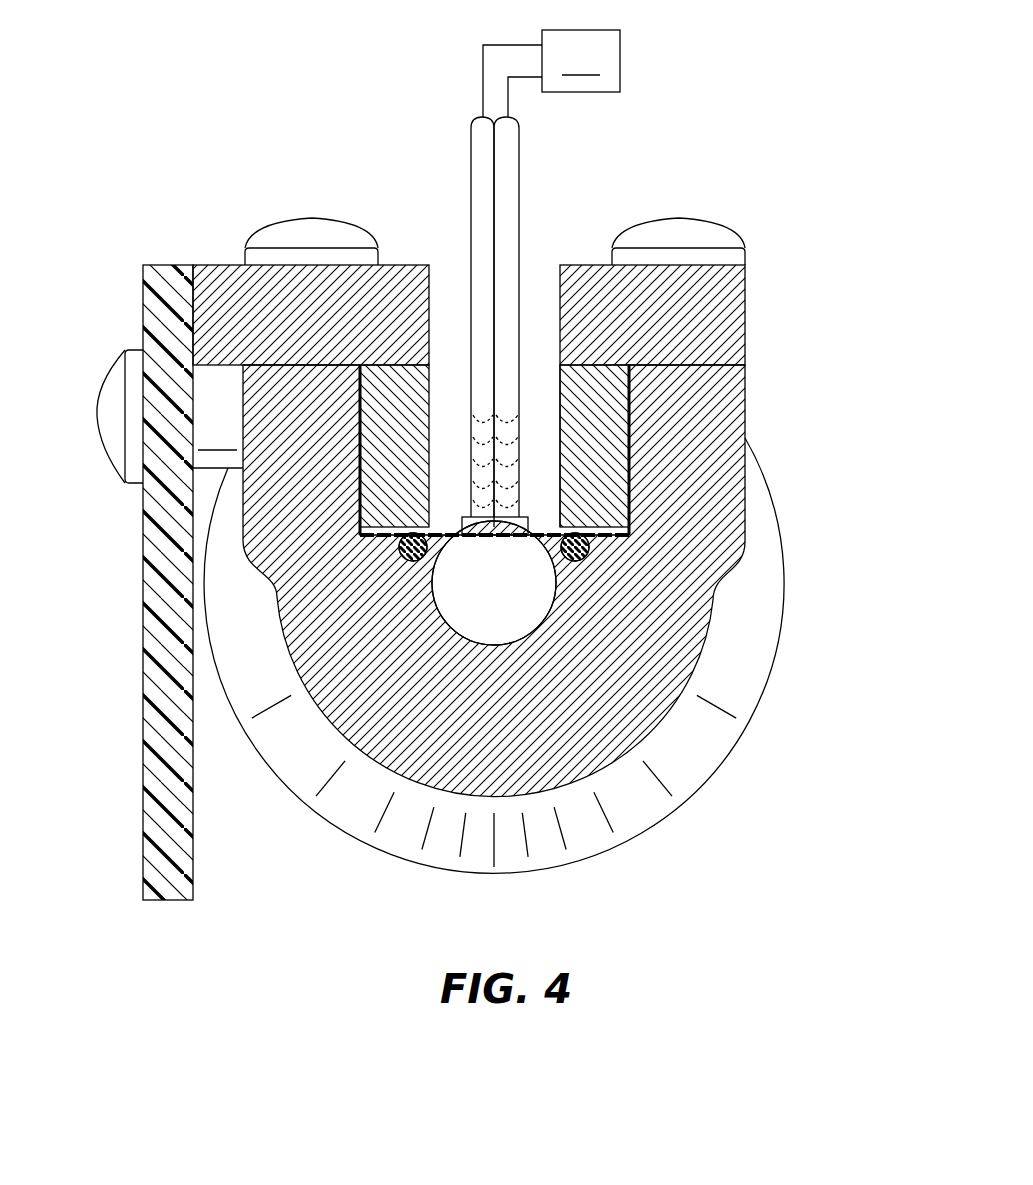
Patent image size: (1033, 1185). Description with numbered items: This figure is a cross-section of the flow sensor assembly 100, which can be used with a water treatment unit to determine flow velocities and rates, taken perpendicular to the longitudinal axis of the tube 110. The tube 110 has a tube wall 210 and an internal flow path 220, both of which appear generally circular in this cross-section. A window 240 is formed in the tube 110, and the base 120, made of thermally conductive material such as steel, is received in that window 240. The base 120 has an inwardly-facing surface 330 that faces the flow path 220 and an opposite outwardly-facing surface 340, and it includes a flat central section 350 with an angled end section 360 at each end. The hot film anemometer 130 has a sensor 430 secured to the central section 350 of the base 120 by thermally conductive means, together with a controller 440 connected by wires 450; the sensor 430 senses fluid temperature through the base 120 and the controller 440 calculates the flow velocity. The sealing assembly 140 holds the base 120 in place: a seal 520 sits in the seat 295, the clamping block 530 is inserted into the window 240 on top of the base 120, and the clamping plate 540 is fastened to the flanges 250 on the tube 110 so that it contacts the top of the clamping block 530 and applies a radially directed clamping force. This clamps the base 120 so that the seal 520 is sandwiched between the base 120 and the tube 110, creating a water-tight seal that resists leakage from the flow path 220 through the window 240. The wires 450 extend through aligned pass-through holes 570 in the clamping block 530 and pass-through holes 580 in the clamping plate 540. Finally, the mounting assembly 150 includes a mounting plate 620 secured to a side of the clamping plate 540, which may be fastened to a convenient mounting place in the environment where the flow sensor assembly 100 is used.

The flow sensor assembly 100 is at (90, 200).
The tube 110 is at (684, 658).
The base 120 is at (468, 544).
The hot film anemometer 130 is at (614, 73).
The sealing assembly 140 is at (535, 285).
The mounting assembly 150 is at (124, 739).
The tube wall 210 is at (607, 720).
The flow path 220 is at (475, 647).
The window 240 is at (455, 422).
The flanges 250 is at (745, 393).
The seat 295 is at (640, 590).
The inwardly-facing surface 330 is at (498, 625).
The outwardly-facing surface 340 is at (460, 517).
The central section 350 is at (545, 605).
The angled end section 360 is at (545, 500).
The sensor 430 is at (515, 470).
The controller 440 is at (581, 61).
The wires 450 is at (478, 172).
The seal 520 is at (530, 527).
The clamping block 530 is at (600, 490).
The clamping plate 540 is at (745, 336).
The pass-through holes 570 is at (508, 518).
The pass-through holes 580 is at (562, 342).
The mounting plate 620 is at (162, 592).